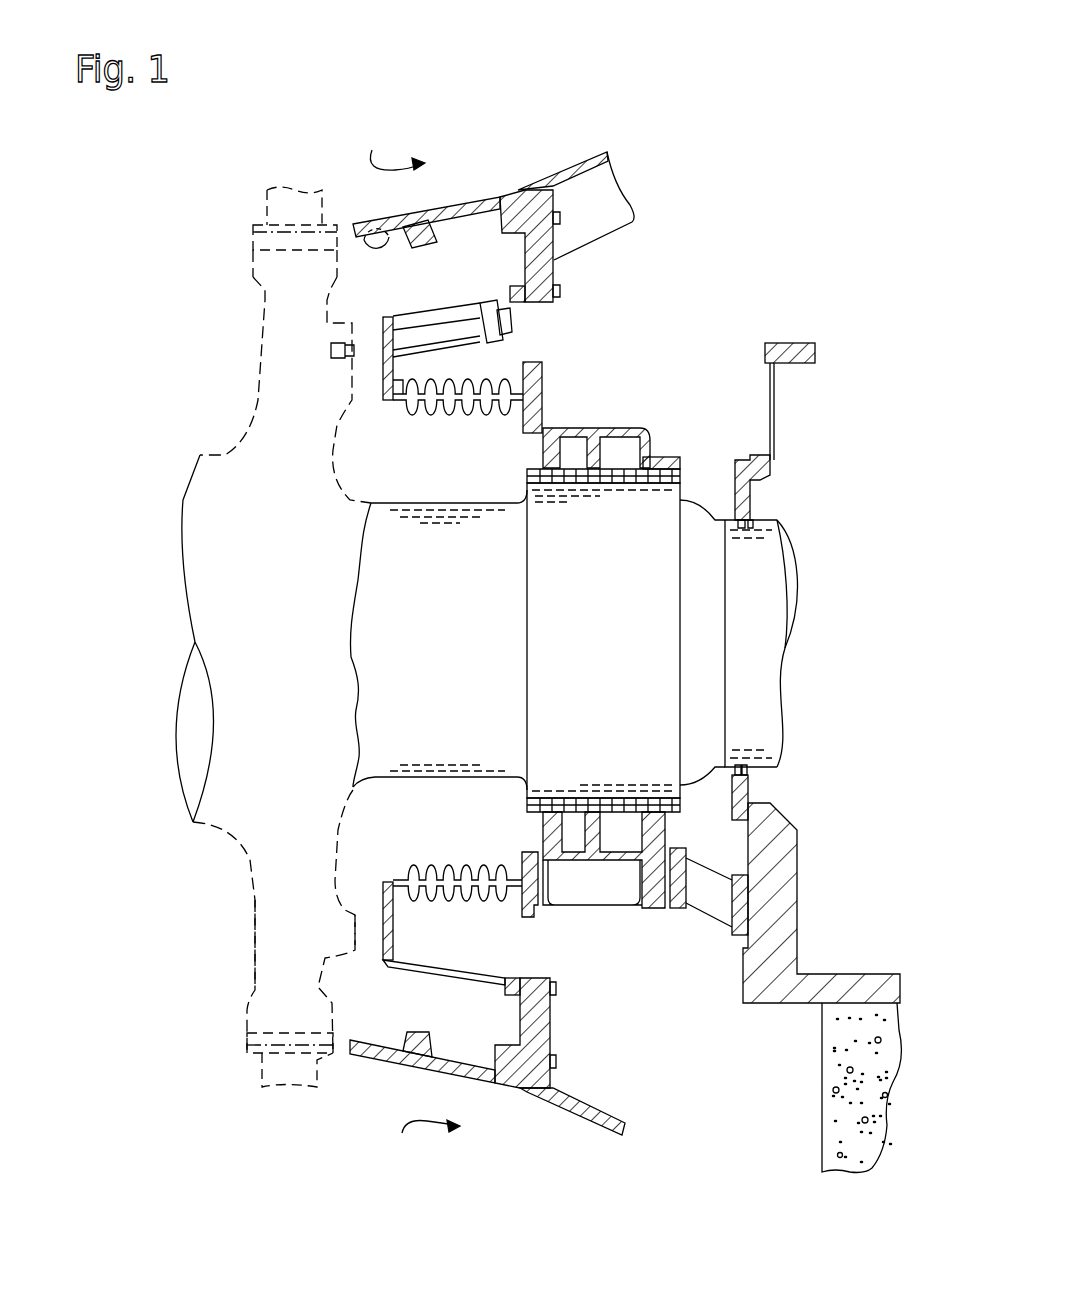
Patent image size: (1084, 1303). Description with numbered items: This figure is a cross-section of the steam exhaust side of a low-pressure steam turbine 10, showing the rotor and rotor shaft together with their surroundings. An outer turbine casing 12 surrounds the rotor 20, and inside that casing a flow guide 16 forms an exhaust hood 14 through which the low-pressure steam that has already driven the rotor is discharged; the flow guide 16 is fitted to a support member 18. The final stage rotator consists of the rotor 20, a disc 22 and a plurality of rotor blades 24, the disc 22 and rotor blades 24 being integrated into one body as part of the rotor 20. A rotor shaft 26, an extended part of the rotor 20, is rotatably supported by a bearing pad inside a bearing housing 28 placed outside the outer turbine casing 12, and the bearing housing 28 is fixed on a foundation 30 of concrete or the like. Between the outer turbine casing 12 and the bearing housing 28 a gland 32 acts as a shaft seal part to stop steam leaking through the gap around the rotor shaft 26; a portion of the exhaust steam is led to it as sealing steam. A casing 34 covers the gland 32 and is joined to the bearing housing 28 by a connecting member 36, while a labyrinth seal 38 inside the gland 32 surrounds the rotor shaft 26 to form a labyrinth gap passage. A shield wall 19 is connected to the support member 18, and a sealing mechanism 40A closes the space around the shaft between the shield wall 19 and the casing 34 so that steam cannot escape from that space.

The low-pressure steam turbine 10 is at (687, 183).
The outer turbine casing 12 is at (580, 152).
The exhaust hood 14 is at (435, 140).
The flow guide 16 is at (415, 206).
The support member 18 is at (517, 270).
The shield wall 19 is at (384, 325).
The rotor 20 is at (204, 453).
The disc 22 is at (269, 328).
The rotor blades 24 is at (285, 190).
The rotor shaft 26 is at (765, 520).
The bearing housing 28 is at (786, 347).
The foundation 30 is at (822, 1120).
The gland 32 is at (610, 428).
The casing 34 is at (545, 380).
The connecting member 36 is at (670, 908).
The labyrinth seal 38 is at (616, 486).
The sealing mechanism 40A is at (402, 435).